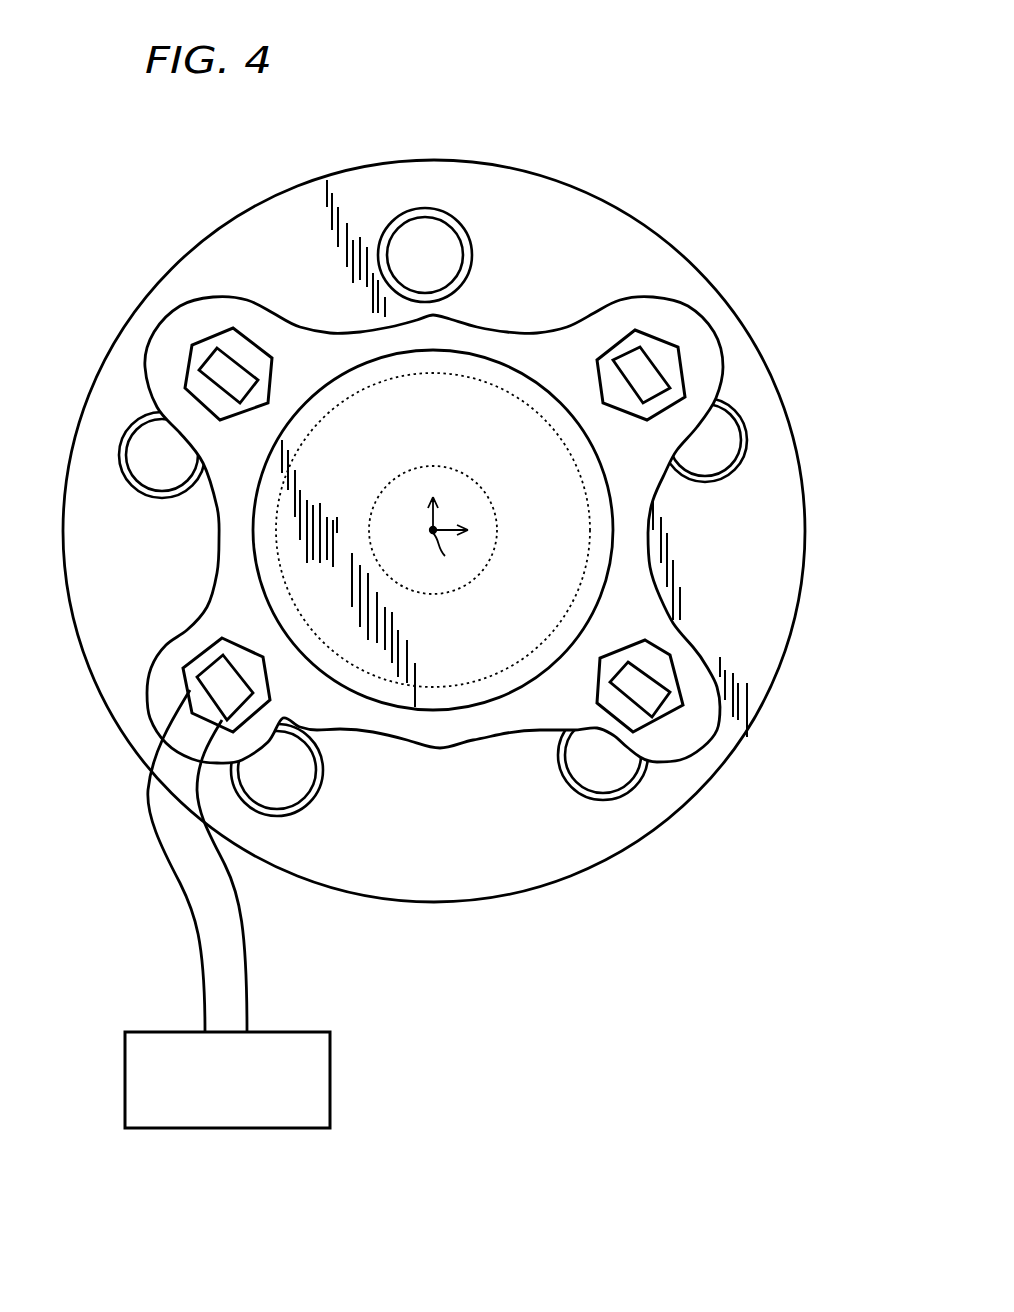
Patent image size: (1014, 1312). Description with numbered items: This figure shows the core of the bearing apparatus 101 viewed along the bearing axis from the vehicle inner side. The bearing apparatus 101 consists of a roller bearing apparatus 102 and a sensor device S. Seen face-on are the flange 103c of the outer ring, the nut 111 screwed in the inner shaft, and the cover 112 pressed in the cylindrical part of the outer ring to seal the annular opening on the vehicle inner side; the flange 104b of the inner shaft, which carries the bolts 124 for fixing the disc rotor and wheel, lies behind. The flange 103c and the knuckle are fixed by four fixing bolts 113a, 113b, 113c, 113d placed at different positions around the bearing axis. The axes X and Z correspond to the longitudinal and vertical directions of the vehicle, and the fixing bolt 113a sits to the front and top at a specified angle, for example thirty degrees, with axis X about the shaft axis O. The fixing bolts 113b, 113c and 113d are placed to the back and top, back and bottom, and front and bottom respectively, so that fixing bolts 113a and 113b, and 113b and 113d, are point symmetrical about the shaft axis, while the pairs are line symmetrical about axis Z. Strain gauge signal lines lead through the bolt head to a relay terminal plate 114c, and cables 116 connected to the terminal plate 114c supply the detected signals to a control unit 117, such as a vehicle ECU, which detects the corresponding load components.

The bearing apparatus 101 is at (623, 113).
The roller bearing apparatus 102 is at (640, 222).
The flange 103c is at (632, 555).
The flange 104b is at (500, 865).
The nut 111 is at (490, 495).
The cover 112 is at (452, 697).
The fixing bolt 113a is at (250, 352).
The fixing bolt 113b is at (655, 348).
The fixing bolt 113c is at (673, 672).
The fixing bolt 113d is at (258, 682).
The relay terminal plate 114c is at (212, 372).
The cables 116 is at (240, 917).
The control unit 117 is at (330, 1060).
The bolts 124 is at (437, 240).
The sensor device S is at (326, 991).